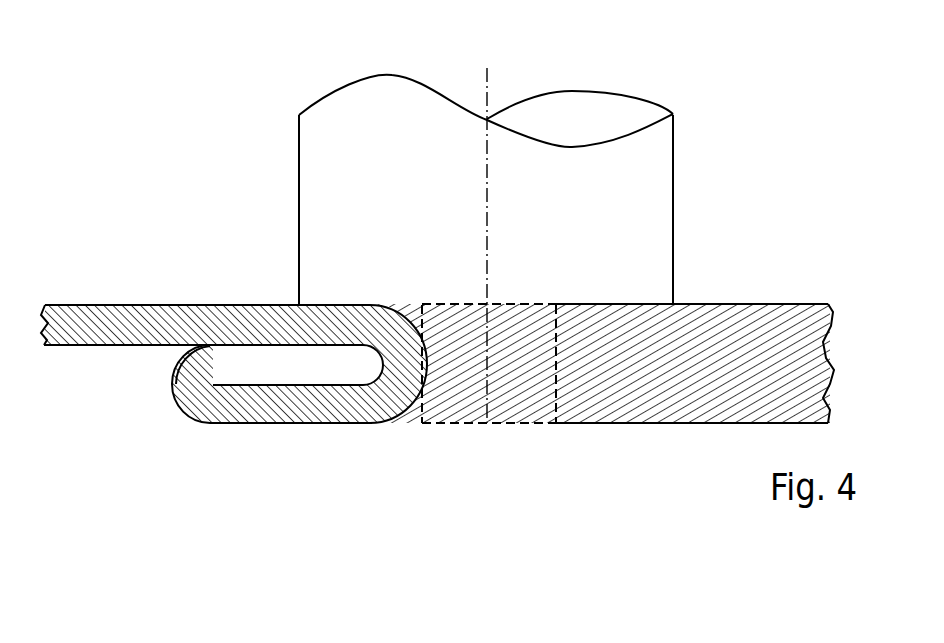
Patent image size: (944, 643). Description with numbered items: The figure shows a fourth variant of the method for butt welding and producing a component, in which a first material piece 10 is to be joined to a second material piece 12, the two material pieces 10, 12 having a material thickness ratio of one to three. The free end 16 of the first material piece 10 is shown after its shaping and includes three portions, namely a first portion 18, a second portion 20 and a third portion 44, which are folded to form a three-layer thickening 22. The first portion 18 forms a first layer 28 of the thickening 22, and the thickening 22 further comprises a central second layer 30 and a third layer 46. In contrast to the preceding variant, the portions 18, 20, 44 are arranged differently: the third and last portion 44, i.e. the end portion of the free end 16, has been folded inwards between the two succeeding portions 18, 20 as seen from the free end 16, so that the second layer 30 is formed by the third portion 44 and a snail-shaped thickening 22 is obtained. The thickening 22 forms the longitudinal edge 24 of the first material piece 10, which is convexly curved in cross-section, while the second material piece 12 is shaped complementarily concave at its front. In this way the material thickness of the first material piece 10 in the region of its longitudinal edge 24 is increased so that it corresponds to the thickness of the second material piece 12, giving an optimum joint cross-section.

The first material piece 10 is at (78, 320).
The second material piece 12 is at (640, 388).
The free end 16 is at (161, 424).
The first portion 18 is at (193, 318).
The second portion 20 is at (279, 411).
The thickening 22 is at (221, 459).
The longitudinal edge 24 is at (413, 303).
The first layer 28 is at (364, 307).
The second layer 30 is at (251, 372).
The third portion 44 is at (233, 373).
The third layer 46 is at (353, 411).